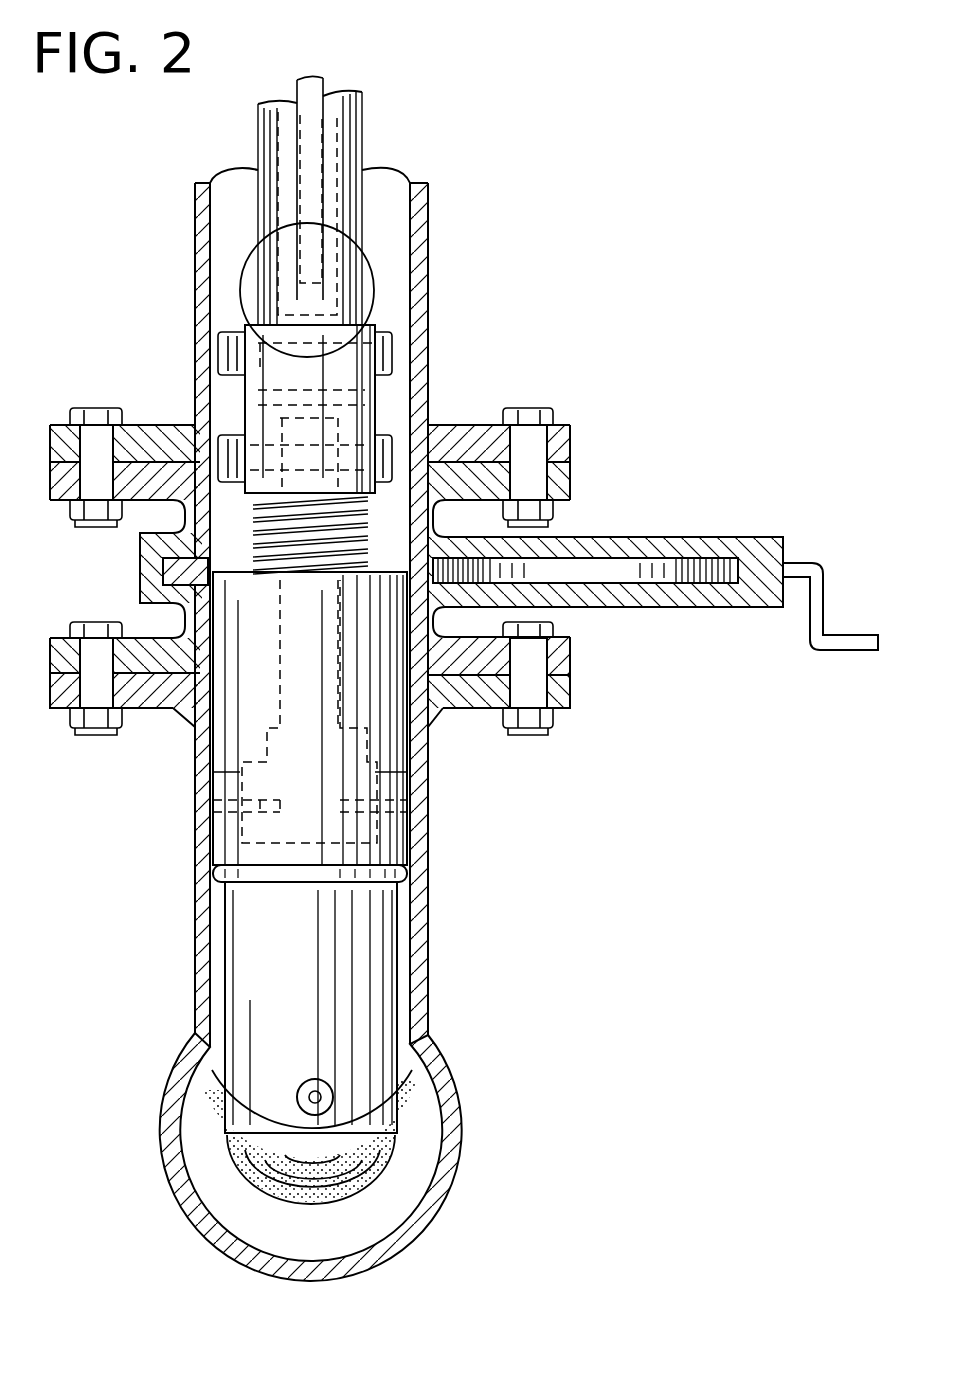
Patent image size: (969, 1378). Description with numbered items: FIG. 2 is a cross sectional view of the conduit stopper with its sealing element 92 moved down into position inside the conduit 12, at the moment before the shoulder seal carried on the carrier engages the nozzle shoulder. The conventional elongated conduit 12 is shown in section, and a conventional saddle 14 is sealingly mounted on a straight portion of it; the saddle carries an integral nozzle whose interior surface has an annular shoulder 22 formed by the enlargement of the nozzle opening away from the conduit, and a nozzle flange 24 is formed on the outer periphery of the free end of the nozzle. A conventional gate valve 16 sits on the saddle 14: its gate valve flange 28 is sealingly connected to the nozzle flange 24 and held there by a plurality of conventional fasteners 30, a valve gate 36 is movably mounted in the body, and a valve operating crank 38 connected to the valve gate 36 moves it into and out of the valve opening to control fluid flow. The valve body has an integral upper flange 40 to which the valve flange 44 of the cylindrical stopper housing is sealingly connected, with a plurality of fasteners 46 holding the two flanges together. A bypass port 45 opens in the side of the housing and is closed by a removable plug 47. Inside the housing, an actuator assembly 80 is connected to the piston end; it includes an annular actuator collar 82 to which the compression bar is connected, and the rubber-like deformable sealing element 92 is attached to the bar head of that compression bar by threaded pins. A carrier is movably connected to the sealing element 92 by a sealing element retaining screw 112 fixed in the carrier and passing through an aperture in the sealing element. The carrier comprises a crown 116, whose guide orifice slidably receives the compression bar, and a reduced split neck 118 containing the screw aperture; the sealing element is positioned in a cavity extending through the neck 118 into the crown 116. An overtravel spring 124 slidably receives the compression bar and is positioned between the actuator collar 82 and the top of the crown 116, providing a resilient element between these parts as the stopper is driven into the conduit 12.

The conduit 12 is at (430, 1170).
The saddle 14 is at (432, 912).
The gate valve 16 is at (666, 536).
The annular shoulder 22 is at (403, 887).
The nozzle flange 24 is at (560, 697).
The gate valve flange 28 is at (566, 662).
The fasteners 30 is at (92, 702).
The valve gate 36 is at (690, 580).
The valve operating crank 38 is at (847, 647).
The upper flange 40 is at (565, 500).
The valve flange 44 is at (562, 457).
The bypass port 45 is at (364, 255).
The fasteners 46 is at (527, 410).
The removable plug 47 is at (250, 295).
The actuator assembly 80 is at (386, 400).
The actuator collar 82 is at (255, 420).
The sealing element 92 is at (417, 1095).
The sealing element retaining screw 112 is at (302, 1083).
The crown 116 is at (390, 783).
The reduced split neck 118 is at (375, 975).
The overtravel spring 124 is at (255, 528).